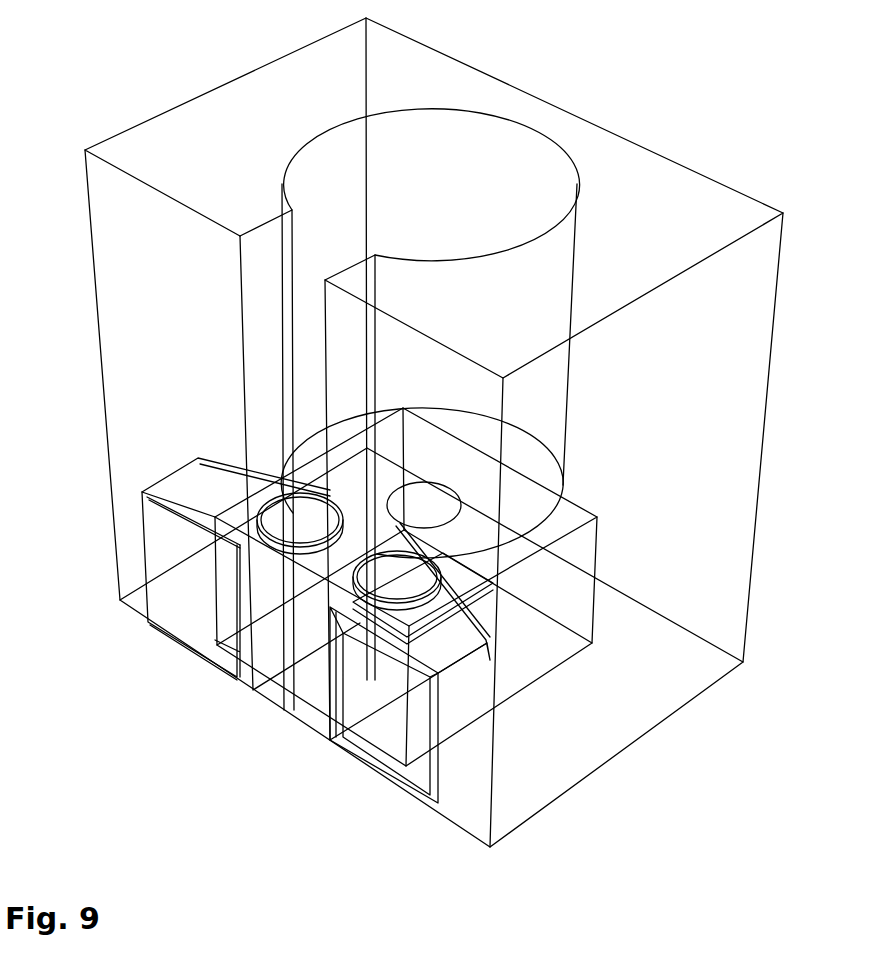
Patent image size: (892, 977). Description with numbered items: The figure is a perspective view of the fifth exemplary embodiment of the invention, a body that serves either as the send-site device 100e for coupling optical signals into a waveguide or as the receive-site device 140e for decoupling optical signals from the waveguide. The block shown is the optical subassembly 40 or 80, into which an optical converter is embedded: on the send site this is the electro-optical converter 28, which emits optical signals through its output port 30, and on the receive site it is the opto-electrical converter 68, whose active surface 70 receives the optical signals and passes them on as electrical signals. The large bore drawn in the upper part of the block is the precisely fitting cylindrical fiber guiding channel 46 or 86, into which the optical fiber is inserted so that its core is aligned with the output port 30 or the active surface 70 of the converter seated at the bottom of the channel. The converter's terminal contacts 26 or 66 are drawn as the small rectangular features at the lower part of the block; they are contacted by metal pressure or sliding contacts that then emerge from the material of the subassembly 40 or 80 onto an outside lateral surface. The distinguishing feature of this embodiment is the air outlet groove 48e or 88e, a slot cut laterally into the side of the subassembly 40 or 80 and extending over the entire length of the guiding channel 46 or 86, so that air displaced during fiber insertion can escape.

The device for coupling optical signals 100e is at (105, 43).
The device for decoupling optical signals 140e is at (396, 432).
The fiber guiding channel 46 is at (430, 233).
The fiber guiding channel 86 is at (452, 381).
The optical subassembly 40 is at (203, 363).
The optical subassembly 80 is at (195, 463).
The air outlet groove 48e is at (267, 408).
The air outlet groove 88e is at (255, 475).
The output port 30 is at (427, 507).
The active surface 70 is at (604, 480).
The electro-optical converter 28 is at (547, 637).
The opto-electrical converter 68 is at (519, 587).
The terminal contacts 26 is at (375, 680).
The terminal contacts 66 is at (291, 630).